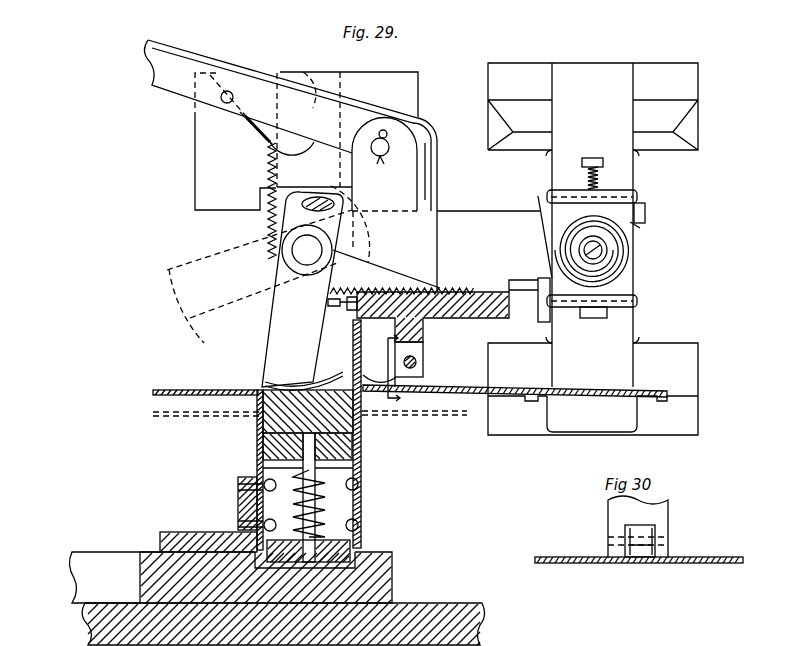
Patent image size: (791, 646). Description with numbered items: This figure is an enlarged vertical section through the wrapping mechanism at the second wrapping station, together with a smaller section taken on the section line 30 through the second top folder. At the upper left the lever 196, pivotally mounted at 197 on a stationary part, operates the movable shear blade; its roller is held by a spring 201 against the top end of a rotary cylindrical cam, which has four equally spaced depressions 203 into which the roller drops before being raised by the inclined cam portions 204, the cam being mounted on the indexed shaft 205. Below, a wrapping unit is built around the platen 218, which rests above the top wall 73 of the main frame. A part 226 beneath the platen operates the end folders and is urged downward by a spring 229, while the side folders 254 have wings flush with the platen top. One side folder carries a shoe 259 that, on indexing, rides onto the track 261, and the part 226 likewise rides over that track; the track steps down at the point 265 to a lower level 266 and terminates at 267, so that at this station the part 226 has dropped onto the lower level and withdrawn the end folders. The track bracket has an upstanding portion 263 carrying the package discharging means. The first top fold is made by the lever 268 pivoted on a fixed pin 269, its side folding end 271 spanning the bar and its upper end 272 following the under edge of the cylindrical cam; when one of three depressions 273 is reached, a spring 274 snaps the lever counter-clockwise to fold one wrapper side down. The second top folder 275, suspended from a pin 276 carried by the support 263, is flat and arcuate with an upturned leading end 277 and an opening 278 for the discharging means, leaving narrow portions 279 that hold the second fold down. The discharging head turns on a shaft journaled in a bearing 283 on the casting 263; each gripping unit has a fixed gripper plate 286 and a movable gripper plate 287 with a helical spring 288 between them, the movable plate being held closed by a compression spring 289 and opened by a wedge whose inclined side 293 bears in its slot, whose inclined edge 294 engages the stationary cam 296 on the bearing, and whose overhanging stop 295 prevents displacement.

In FIG. 29, the lever 196 is at (150, 82).
In FIG. 29, the pivot 197 is at (392, 146).
In FIG. 29, the spring 201 is at (267, 168).
In FIG. 29, the depression 203 is at (311, 71).
In FIG. 29, the inclined cam portion 204 is at (235, 115).
In FIG. 29, the shaft 205 is at (337, 68).
In FIG. 29, the platen 218 is at (260, 450).
In FIG. 29, the end folder operating part 226 is at (355, 555).
In FIG. 29, the spring 229 is at (322, 498).
In FIG. 29, the side folder 254 is at (247, 388).
In FIG. 29, the shoe 259 is at (205, 532).
In FIG. 29, the track 261 is at (145, 550).
In FIG. 29, the upstanding portion 263 is at (492, 296).
In FIG. 29, the point 265 is at (142, 570).
In FIG. 29, the lower level 266 is at (392, 566).
In FIG. 29, the terminal point 267 is at (393, 583).
In FIG. 29, the top fold lever 268 is at (166, 268).
In FIG. 29, the fixed pin 269 is at (287, 243).
In FIG. 29, the side folding end 271 is at (330, 376).
In FIG. 29, the upper end 272 is at (302, 180).
In FIG. 29, the depression 273 is at (327, 192).
In FIG. 29, the spring 274 is at (387, 286).
In FIG. 29, the second top folder 275 is at (463, 386).
In FIG. 29, the pin 276 is at (422, 353).
In FIG. 30, the pin 276 is at (643, 537).
In FIG. 29, the leading end 277 is at (380, 366).
In FIG. 29, the opening 278 is at (572, 397).
In FIG. 29, the narrow portions 279 is at (667, 394).
In FIG. 29, the bearing 283 is at (488, 251).
In FIG. 29, the fixed gripper plate 286 is at (638, 303).
In FIG. 29, the movable gripper plate 287 is at (638, 197).
In FIG. 29, the helical spring 288 is at (636, 258).
In FIG. 29, the compression spring 289 is at (604, 177).
In FIG. 29, the inclined side 293 is at (648, 231).
In FIG. 29, the inclined edge 294 is at (545, 243).
In FIG. 29, the overhanging stop 295 is at (647, 218).
In FIG. 29, the stationary cam 296 is at (546, 303).
In FIG. 29, the section line 30 is at (382, 370).
In FIG. 29, the top wall 73 is at (458, 603).